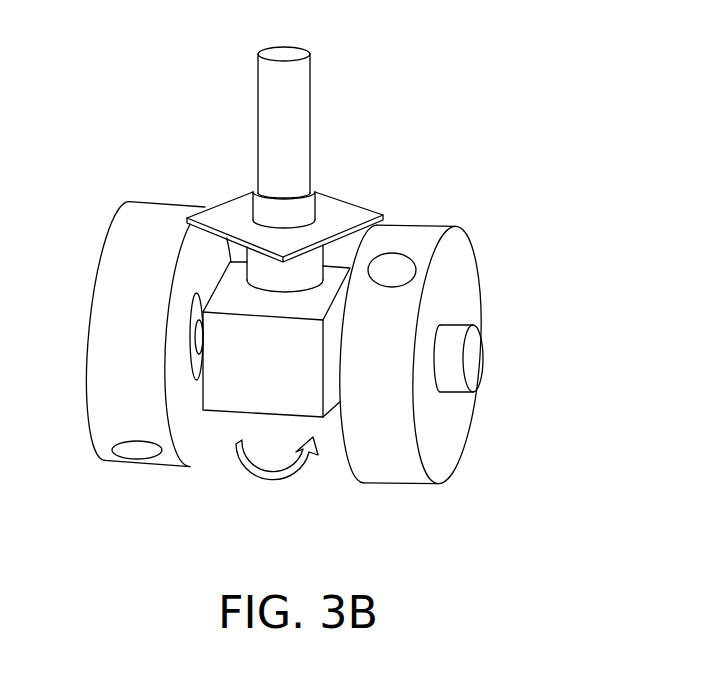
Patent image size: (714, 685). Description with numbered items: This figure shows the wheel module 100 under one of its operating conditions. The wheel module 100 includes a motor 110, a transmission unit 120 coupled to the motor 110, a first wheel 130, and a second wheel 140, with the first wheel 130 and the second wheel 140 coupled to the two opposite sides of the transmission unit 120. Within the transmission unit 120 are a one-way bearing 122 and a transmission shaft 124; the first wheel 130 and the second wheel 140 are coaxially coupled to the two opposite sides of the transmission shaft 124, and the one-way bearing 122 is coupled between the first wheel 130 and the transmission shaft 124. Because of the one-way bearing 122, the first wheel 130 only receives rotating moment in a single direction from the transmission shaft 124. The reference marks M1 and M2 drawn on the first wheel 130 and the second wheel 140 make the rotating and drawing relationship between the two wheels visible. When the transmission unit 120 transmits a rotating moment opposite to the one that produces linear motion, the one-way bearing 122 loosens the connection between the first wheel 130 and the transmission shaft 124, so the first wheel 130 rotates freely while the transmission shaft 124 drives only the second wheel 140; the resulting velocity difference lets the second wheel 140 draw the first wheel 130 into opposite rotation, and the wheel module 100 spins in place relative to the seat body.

The wheel module 100 is at (492, 60).
The motor 110 is at (298, 110).
The transmission unit 120 is at (218, 403).
The one-way bearing 122 is at (200, 300).
The transmission shaft 124 is at (200, 340).
The first wheel 130 is at (158, 376).
The second wheel 140 is at (441, 387).
The reference on first wheel M1 is at (128, 452).
The reference on second wheel M2 is at (403, 272).